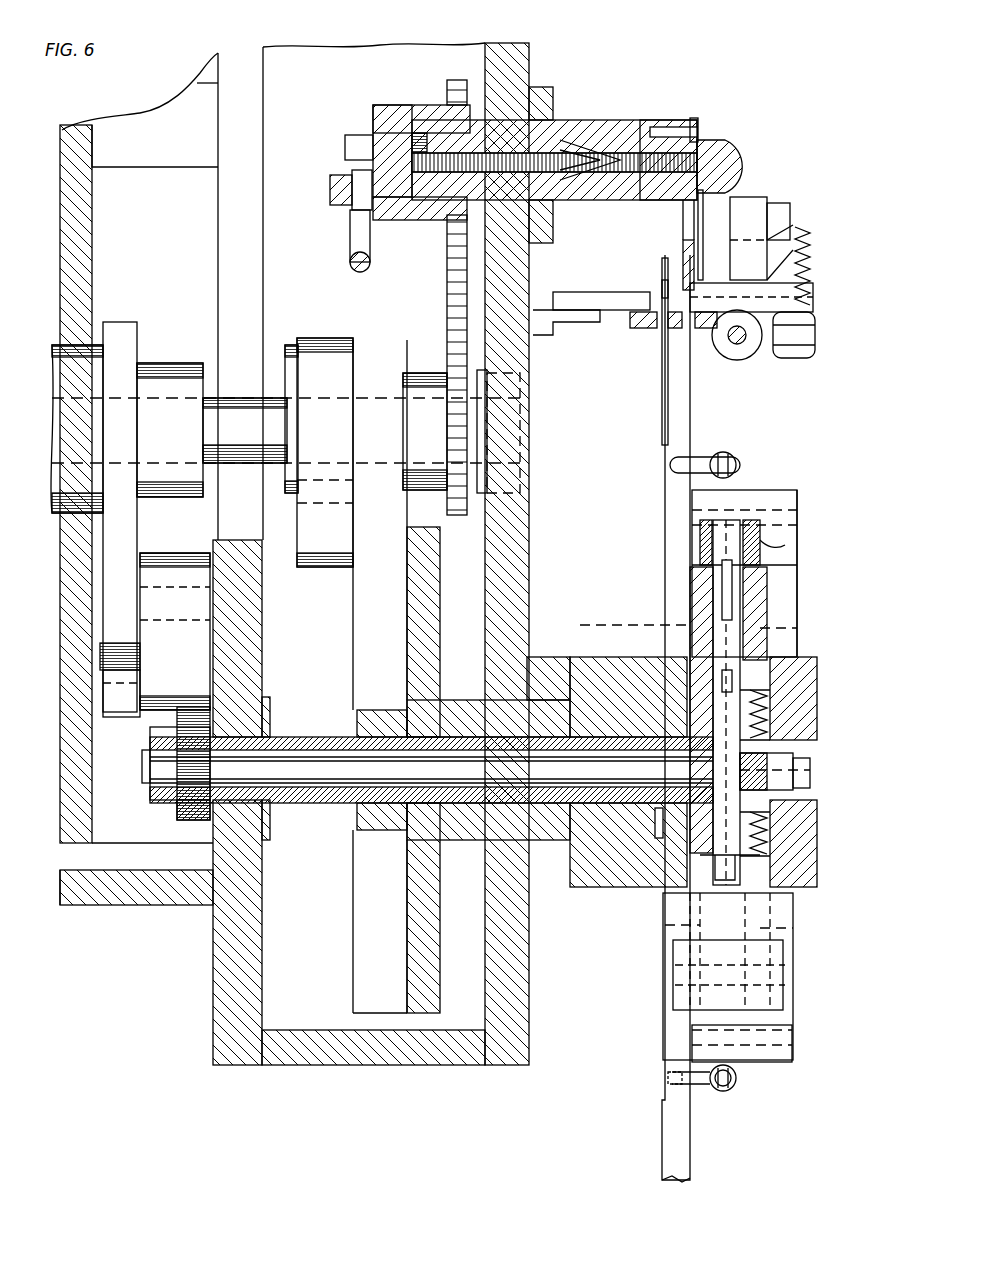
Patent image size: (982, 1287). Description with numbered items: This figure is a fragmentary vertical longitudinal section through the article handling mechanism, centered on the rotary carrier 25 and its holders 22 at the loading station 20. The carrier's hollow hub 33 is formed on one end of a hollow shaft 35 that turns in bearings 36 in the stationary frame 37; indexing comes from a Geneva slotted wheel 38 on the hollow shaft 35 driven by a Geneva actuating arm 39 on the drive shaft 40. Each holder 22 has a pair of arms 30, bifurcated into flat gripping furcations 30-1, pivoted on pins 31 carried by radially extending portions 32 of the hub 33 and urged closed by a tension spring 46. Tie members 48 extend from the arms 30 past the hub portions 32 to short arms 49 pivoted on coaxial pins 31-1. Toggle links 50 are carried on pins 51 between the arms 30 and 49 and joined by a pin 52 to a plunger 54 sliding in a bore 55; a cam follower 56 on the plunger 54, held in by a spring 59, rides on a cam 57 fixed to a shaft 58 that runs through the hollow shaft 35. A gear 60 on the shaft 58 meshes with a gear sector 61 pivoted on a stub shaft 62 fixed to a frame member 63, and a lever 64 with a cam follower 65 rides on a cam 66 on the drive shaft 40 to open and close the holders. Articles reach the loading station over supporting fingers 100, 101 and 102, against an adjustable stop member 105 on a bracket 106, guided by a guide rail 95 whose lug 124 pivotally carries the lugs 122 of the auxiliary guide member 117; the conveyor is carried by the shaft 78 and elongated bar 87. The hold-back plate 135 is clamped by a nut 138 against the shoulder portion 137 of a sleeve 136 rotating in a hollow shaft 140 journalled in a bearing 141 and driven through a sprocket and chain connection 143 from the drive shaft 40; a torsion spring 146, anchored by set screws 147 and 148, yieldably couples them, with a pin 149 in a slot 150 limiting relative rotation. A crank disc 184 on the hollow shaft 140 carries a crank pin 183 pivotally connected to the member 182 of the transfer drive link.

The loading station 20 is at (620, 254).
The holder 22 is at (712, 399).
The rotary carrier 25 is at (788, 968).
The arm 30 is at (670, 432).
The furcation 30-1 is at (662, 296).
The pin 31 is at (620, 620).
The pin 31-1 is at (795, 630).
The radially extending portion 32 is at (700, 620).
The hollow hub 33 is at (700, 808).
The hollow shaft 35 is at (318, 742).
The bearing 36 is at (598, 700).
The frame 37 is at (515, 66).
The slotted wheel 38 is at (425, 910).
The Geneva actuating arm 39 is at (322, 560).
The drive shaft 40 is at (225, 410).
The tension spring 46 is at (735, 462).
The tie member 48 is at (678, 975).
The arm 49 is at (788, 532).
The toggle link 50 is at (705, 542).
The pin 51 is at (784, 497).
The pin 52 is at (770, 545).
The plunger 54 is at (718, 568).
The bore 55 is at (722, 592).
The cam follower 56 is at (722, 680).
The cam 57 is at (735, 812).
The shaft 58 is at (148, 762).
The spring 59 is at (765, 712).
The gear 60 is at (188, 814).
The gear sector 61 is at (195, 708).
The stub shaft 62 is at (142, 604).
The frame member 63 is at (245, 634).
The lever 64 is at (118, 705).
The cam follower 65 is at (112, 698).
The cam 66 is at (125, 545).
The shaft 78 is at (737, 345).
The elongated bar 87 is at (790, 358).
The guide rail 95 is at (792, 345).
The supporting finger 100 is at (705, 328).
The supporting finger 101 is at (675, 328).
The supporting finger 102 is at (640, 328).
The adjustable stop member 105 is at (588, 300).
The bracket 106 is at (560, 322).
The auxiliary guide member 117 is at (690, 262).
The lug 122 is at (776, 220).
The lug 124 is at (750, 215).
The hold-back plate 135 is at (705, 210).
The sleeve 136 is at (640, 155).
The shoulder portion 137 is at (662, 272).
The nut 138 is at (724, 165).
The hollow shaft 140 is at (538, 148).
The bearing 141 is at (553, 140).
The sprocket and chain connection 143 is at (467, 292).
The torsion spring 146 is at (585, 165).
The set screw 147 is at (690, 212).
The set screw 148 is at (390, 128).
The pin 149 is at (680, 130).
The slot 150 is at (698, 140).
The member 182 is at (348, 243).
The crank pin 183 is at (335, 190).
The crank disc 184 is at (365, 142).